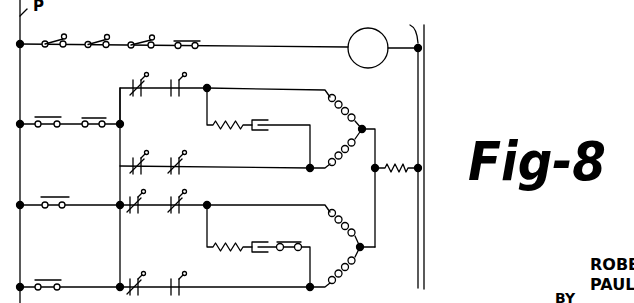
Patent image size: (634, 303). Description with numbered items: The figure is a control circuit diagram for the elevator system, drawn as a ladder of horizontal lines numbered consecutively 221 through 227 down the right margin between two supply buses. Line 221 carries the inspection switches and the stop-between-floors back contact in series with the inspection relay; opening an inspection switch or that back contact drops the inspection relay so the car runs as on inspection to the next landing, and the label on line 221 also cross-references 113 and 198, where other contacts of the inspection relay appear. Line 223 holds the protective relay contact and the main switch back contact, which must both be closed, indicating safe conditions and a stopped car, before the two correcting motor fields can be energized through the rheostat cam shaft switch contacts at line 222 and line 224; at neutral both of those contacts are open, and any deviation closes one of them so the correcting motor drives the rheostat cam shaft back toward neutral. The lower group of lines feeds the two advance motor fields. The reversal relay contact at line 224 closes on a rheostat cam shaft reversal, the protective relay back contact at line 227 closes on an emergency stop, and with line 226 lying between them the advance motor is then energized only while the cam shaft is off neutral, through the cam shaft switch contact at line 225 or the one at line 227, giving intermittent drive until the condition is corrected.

The circuit line 221 is at (424, 50).
The circuit line 222 is at (424, 90).
The circuit line 223 is at (424, 130).
The circuit line 224 is at (424, 169).
The circuit line 225 is at (424, 209).
The AMR overload relay line 226 is at (424, 248).
The circuit line 227 is at (424, 288).
The indicator lamp 113 is at (528, 60).
The indicator lamp 198 is at (569, 60).